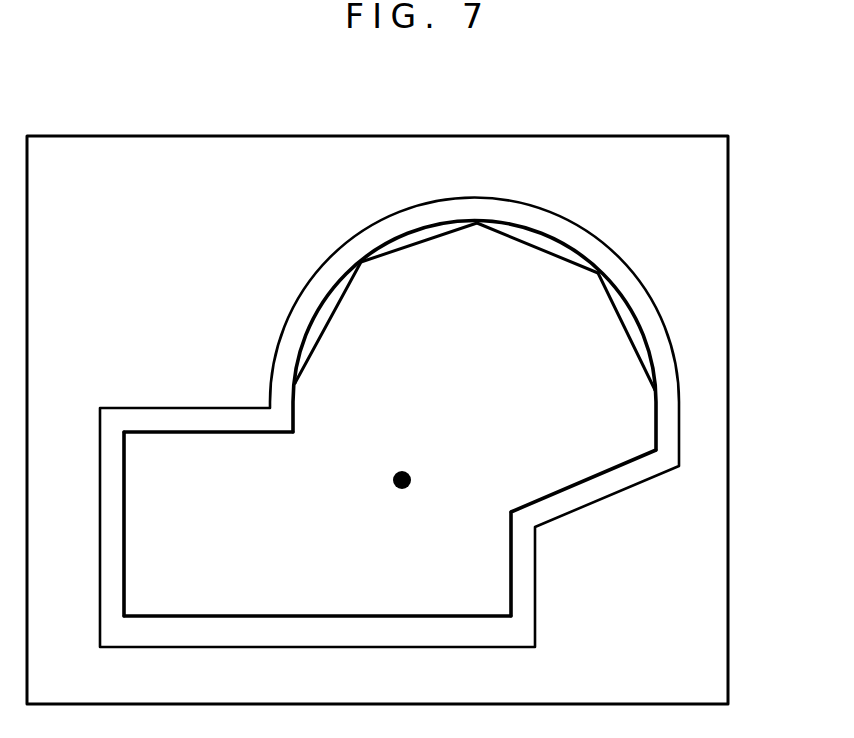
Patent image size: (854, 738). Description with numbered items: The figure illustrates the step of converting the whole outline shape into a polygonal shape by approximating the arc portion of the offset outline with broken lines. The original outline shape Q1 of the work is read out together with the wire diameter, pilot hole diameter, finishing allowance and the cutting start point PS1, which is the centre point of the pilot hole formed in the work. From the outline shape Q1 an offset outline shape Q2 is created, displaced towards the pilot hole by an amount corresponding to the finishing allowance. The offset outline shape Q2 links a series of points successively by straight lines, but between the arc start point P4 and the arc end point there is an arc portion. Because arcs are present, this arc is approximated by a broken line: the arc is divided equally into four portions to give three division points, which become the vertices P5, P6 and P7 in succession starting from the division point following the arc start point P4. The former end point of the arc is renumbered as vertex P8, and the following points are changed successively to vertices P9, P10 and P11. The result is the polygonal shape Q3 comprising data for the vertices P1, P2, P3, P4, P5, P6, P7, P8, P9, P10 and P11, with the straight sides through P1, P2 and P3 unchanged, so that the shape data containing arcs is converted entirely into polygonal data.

The outline shape Q1 is at (278, 334).
The offset outline shape Q2 is at (637, 313).
The polygonal shape Q3 is at (533, 245).
The cutting start point PS1 is at (448, 433).
The vertex P1 is at (126, 613).
The vertex P2 is at (126, 436).
The vertex P3 is at (294, 434).
The arc start point P4 is at (296, 388).
The vertex P5 is at (360, 265).
The vertex P6 is at (476, 226).
The vertex P7 is at (597, 276).
The arc end point vertex P8 is at (654, 391).
The vertex P9 is at (654, 447).
The vertex P10 is at (510, 513).
The vertex P11 is at (510, 614).